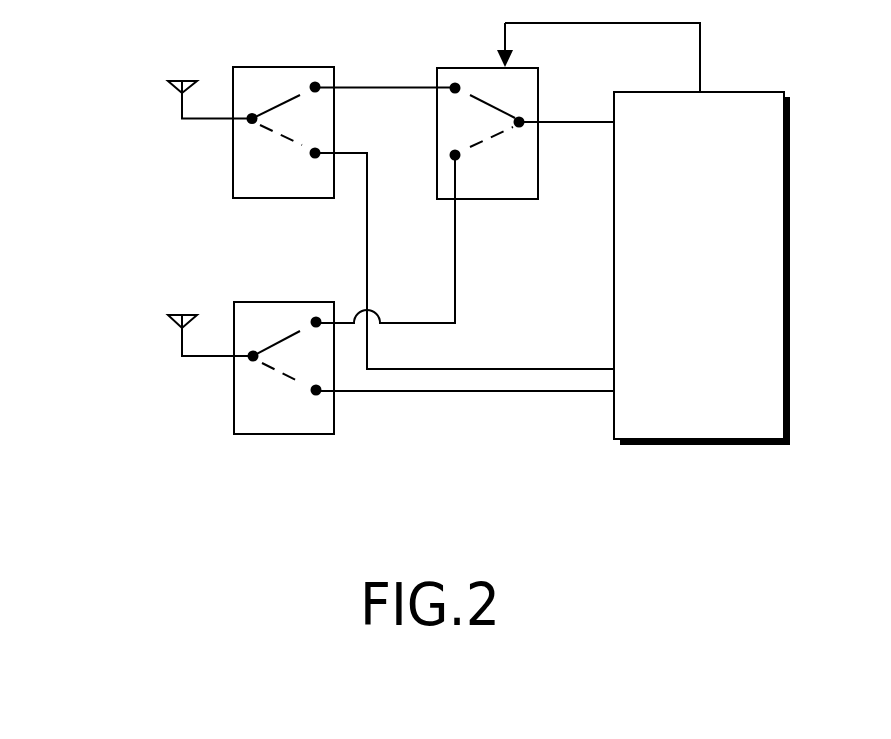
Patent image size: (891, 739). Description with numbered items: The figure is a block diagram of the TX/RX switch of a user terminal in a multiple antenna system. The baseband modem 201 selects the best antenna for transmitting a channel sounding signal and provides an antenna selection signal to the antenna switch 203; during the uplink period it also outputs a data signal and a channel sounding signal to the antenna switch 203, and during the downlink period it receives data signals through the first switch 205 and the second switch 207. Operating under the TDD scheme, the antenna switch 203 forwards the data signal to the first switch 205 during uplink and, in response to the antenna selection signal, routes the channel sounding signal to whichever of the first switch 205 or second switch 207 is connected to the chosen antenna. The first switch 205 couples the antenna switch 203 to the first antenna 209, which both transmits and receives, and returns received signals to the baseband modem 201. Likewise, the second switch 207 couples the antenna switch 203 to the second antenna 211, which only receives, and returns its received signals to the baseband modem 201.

The baseband modem 201 is at (790, 143).
The antenna switch 203 is at (463, 66).
The first switch 205 is at (283, 66).
The second switch 207 is at (284, 300).
The first antenna 209 is at (182, 78).
The second antenna 211 is at (182, 314).